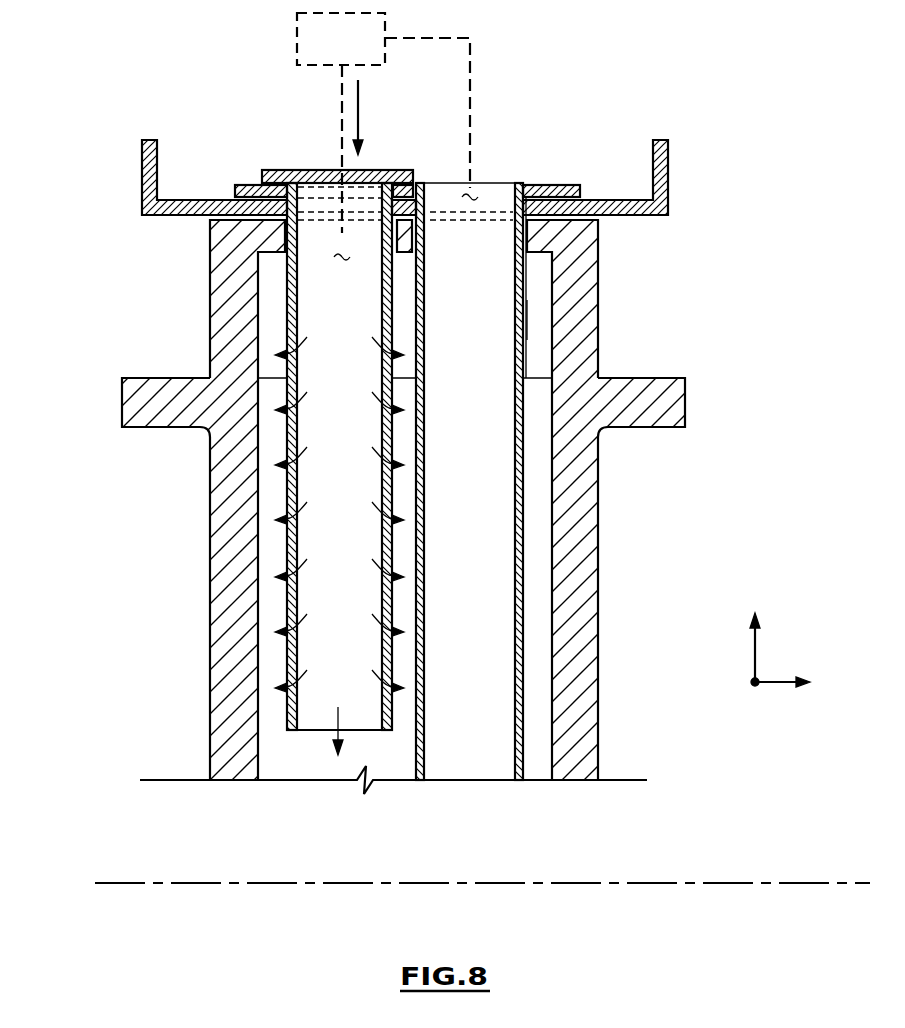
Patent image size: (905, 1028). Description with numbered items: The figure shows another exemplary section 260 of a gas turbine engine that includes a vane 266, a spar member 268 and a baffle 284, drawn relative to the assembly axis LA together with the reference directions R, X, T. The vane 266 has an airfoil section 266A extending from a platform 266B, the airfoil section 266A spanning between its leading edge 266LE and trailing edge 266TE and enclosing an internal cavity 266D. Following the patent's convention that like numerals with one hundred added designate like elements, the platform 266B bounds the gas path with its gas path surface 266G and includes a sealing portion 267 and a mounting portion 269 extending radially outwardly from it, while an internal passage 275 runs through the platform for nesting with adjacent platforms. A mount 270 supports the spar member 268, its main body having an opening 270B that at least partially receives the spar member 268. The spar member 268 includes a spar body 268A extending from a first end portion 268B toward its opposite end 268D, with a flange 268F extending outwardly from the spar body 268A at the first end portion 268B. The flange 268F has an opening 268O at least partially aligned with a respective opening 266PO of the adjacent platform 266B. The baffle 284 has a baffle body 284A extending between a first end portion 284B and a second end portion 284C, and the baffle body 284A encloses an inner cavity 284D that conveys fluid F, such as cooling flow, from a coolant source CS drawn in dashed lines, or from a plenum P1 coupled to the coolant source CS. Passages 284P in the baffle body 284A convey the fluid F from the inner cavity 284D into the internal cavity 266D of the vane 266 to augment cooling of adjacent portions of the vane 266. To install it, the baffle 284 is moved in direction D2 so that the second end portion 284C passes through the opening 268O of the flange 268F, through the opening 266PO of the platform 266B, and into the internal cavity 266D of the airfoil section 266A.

The section 260 is at (97, 94).
The vane 266 is at (612, 261).
The airfoil section 266A is at (598, 483).
The platform 266B is at (145, 378).
The gas path surface 266G is at (650, 427).
The outer body leading edge 266LE is at (210, 575).
The outer body trailing edge 266TE is at (598, 565).
The internal cavity 266D is at (260, 755).
The platform opening 266PO is at (383, 245).
The sealing portion 267 is at (122, 402).
The spar member 268 is at (568, 172).
The spar body 268A is at (523, 768).
The first end portion 268B is at (525, 183).
The inner tube distal outlet 268D is at (424, 768).
The flange 268F is at (240, 185).
The flange opening 268O is at (382, 170).
The mounting portion 269 is at (210, 290).
The mount 270 is at (680, 159).
The mount opening 270B is at (303, 215).
The internal passage 275 is at (543, 338).
The baffle 284 is at (266, 153).
The baffle body 284A is at (287, 617).
The first end portion 284B is at (290, 170).
The second end portion 284C is at (287, 712).
The inner cavity 284D is at (382, 710).
The passages 284P is at (295, 412).
The fluid F is at (302, 400).
The coolant source CS is at (354, 57).
The direction D2 is at (361, 100).
The plenum P1 is at (440, 150).
The assembly axis LA is at (745, 883).
The radial direction R is at (755, 635).
The axial direction X is at (791, 683).
The tangential direction T is at (750, 690).